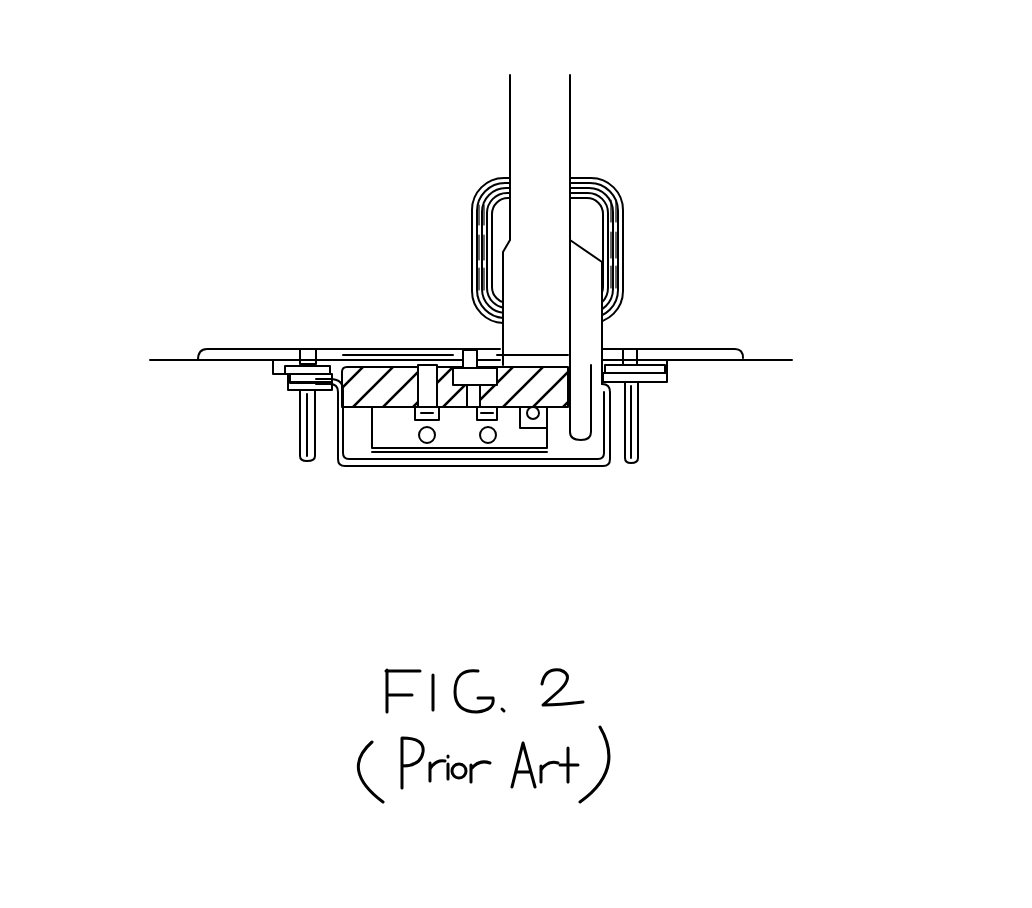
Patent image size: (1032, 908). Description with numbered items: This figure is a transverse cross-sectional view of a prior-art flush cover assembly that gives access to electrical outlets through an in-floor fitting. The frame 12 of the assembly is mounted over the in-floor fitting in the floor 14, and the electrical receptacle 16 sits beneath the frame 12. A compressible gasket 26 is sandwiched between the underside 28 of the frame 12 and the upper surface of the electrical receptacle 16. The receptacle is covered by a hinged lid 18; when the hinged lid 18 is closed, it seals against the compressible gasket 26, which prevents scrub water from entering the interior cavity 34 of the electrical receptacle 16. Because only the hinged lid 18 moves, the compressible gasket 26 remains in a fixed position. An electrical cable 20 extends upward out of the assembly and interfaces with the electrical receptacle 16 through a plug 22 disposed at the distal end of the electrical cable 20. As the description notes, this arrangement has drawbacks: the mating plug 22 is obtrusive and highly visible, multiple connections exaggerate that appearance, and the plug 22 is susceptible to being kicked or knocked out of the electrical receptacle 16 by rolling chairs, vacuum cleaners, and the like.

The frame 12 is at (713, 348).
The floor 14 is at (167, 360).
The electrical receptacle 16 is at (385, 362).
The hinged lid 18 is at (498, 180).
The electrical cable 20 is at (572, 103).
The plug 22 is at (587, 325).
The compressible gasket 26 is at (305, 360).
The underside 28 is at (272, 369).
The interior cavity 34 is at (557, 442).